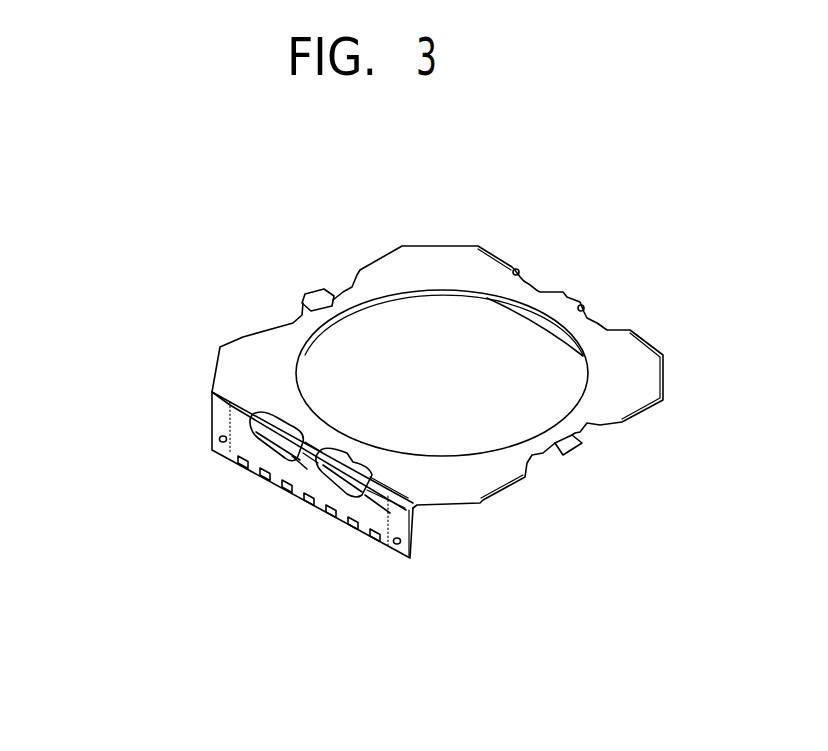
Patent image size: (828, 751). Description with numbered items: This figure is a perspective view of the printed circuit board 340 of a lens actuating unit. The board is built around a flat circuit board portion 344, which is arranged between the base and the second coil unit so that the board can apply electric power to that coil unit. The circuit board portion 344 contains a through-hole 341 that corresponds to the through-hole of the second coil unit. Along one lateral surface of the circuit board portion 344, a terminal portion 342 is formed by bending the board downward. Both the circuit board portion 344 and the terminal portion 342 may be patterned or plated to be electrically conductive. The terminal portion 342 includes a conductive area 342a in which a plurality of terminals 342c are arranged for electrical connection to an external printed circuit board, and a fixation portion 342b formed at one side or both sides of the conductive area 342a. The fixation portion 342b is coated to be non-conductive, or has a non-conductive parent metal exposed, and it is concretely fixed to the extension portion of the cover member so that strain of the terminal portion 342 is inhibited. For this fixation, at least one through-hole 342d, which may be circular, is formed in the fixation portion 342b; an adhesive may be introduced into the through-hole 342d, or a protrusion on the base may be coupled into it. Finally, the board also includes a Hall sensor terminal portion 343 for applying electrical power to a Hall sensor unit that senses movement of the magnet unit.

The printed circuit board 340 is at (150, 180).
The through-hole 341 is at (413, 358).
The terminal portion 342 is at (233, 621).
The conductive area 342a is at (252, 428).
The fixation portion 342b is at (333, 502).
The terminals 342c is at (327, 506).
The through-hole 342d is at (384, 543).
The Hall sensor terminal portion 343 is at (535, 325).
The circuit board portion 344 is at (257, 357).